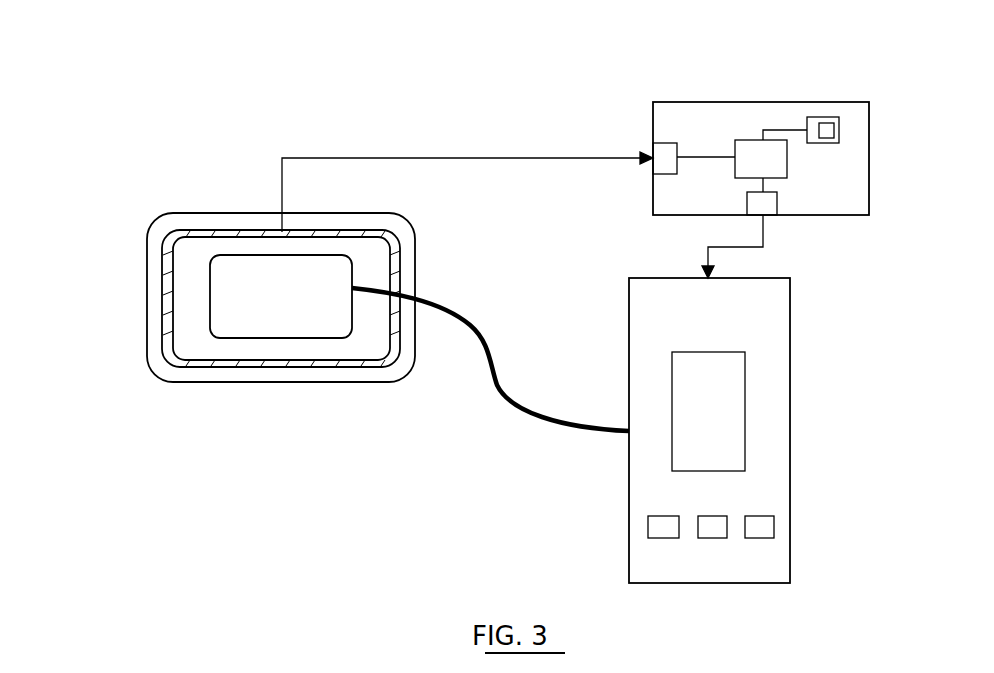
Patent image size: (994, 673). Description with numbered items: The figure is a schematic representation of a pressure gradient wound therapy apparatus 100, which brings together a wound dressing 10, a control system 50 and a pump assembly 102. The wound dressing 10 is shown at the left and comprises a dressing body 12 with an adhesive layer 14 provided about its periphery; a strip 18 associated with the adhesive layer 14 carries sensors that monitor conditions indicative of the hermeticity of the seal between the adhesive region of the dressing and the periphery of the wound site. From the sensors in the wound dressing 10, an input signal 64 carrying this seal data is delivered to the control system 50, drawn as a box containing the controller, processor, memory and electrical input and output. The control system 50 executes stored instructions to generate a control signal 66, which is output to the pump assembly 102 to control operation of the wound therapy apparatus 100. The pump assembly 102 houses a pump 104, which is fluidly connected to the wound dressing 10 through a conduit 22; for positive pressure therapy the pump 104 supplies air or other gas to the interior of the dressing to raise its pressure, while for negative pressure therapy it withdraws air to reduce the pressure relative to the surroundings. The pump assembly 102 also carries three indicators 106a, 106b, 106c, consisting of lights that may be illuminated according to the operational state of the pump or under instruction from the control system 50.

The wound dressing 10 is at (75, 234).
The dressing body 12 is at (288, 308).
The adhesive layer 14 is at (158, 372).
The strip 18 is at (173, 228).
The conduit 22 is at (494, 353).
The control system 50 is at (740, 78).
The input signal 64 is at (467, 182).
The control signal 66 is at (749, 246).
The wound therapy apparatus 100 is at (312, 468).
The pump assembly 102 is at (790, 345).
The pump 104 is at (741, 440).
The indicator 106a is at (663, 538).
The indicator 106b is at (717, 538).
The indicator 106c is at (776, 528).